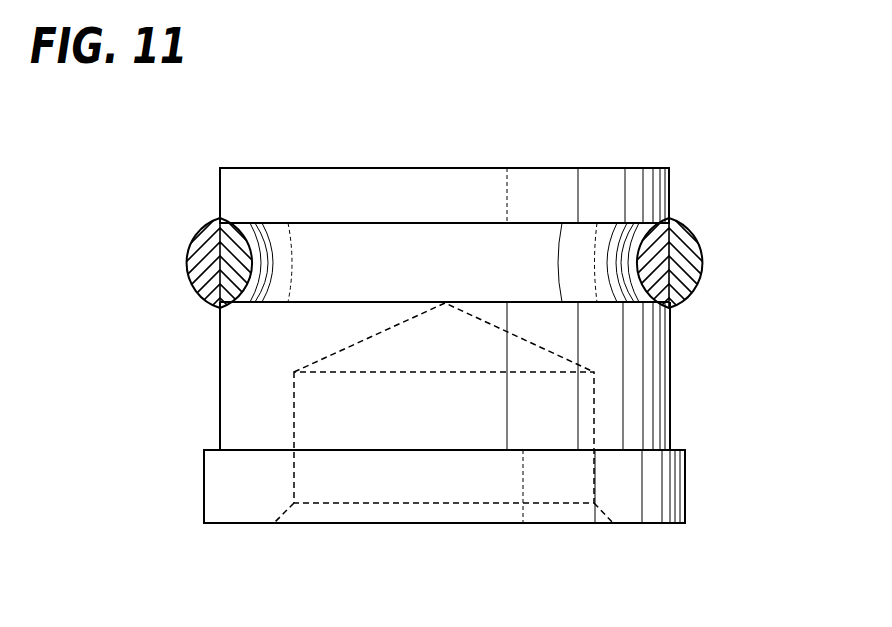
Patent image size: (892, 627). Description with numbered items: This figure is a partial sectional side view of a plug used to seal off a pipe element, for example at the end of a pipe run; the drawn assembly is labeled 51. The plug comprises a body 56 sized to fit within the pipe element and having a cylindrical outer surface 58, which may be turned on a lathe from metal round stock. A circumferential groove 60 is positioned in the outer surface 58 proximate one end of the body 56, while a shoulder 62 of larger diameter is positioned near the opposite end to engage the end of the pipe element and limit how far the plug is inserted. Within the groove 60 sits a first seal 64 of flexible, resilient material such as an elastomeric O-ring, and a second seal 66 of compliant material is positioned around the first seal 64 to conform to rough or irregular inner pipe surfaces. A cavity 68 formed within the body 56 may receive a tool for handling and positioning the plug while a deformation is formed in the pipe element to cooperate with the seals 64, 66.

The pipe connector assembly 51 is at (683, 140).
The body 56 is at (218, 396).
The cylindrical outer surface 58 is at (233, 343).
The circumferential groove 60 is at (500, 281).
The shoulder 62 is at (650, 497).
The first seal 64 is at (256, 263).
The second seal 66 is at (190, 250).
The cavity 68 is at (380, 490).